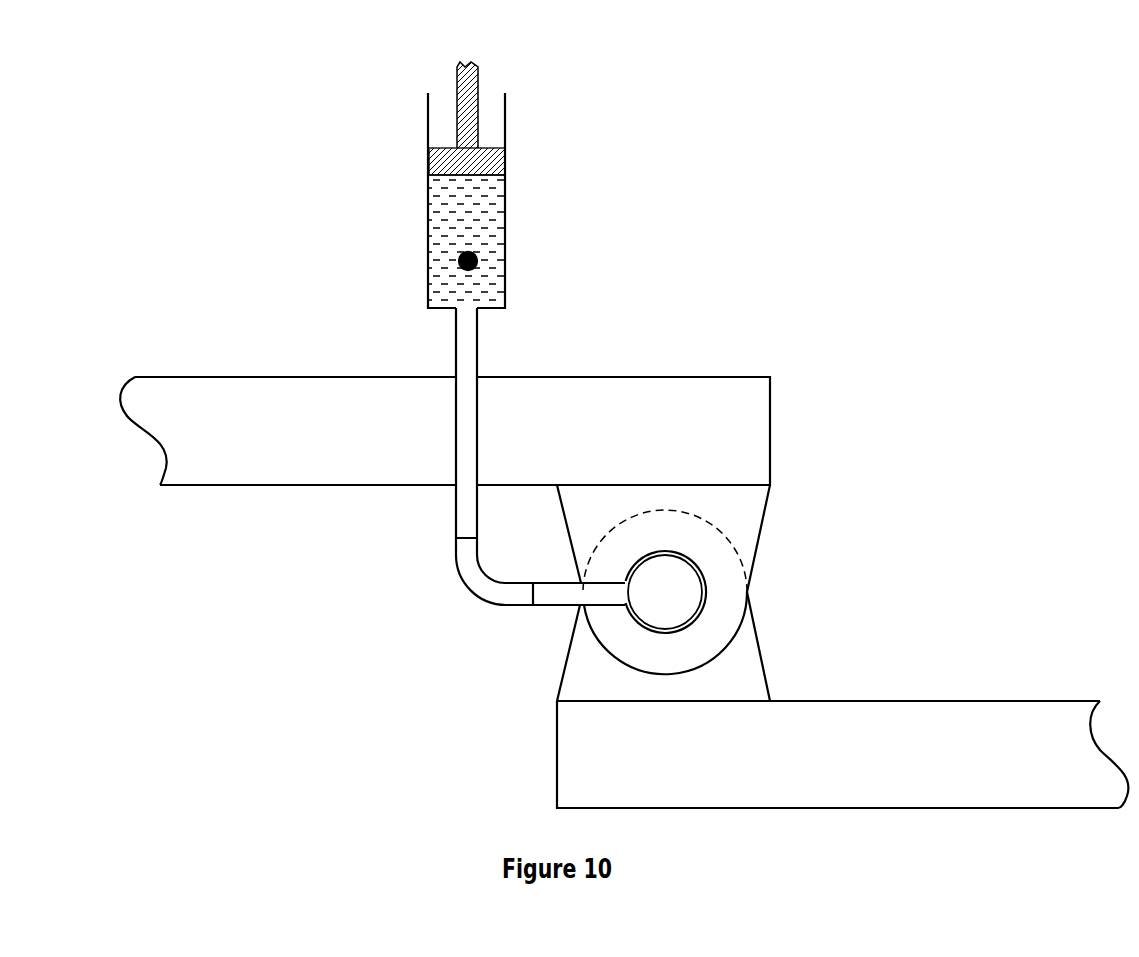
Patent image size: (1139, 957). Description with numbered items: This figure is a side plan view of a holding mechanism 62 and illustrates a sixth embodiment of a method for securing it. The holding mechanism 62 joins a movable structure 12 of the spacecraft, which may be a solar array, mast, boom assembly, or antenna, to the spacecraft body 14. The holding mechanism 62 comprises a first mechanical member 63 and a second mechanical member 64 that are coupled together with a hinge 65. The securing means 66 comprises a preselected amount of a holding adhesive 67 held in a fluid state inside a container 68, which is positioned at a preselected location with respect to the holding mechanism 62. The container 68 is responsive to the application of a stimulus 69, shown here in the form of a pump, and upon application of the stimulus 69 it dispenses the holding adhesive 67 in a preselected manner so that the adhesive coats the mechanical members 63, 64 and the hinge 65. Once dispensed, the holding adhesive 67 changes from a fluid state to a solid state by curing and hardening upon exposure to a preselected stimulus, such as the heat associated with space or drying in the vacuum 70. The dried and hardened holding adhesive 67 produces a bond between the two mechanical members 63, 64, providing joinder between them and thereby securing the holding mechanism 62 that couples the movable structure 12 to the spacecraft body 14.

The movable structure 12 is at (940, 718).
The spacecraft body 14 is at (295, 468).
The holding mechanism 62 is at (761, 578).
The first mechanical member 63 is at (767, 510).
The second mechanical member 64 is at (766, 662).
The hinge 65 is at (705, 597).
The securing means 66 is at (475, 167).
The holding adhesive 67 is at (458, 257).
The container 68 is at (502, 246).
The stimulus 69 is at (478, 90).
The vacuum 70 is at (390, 722).